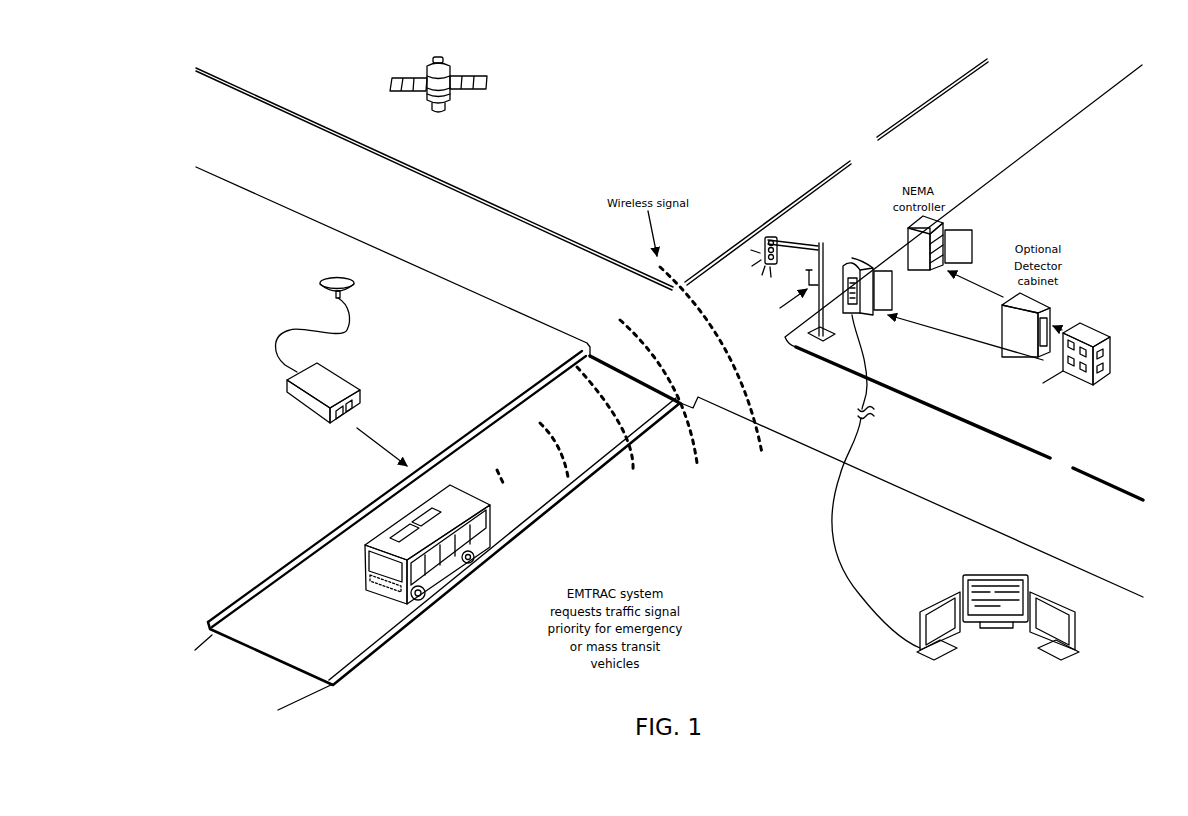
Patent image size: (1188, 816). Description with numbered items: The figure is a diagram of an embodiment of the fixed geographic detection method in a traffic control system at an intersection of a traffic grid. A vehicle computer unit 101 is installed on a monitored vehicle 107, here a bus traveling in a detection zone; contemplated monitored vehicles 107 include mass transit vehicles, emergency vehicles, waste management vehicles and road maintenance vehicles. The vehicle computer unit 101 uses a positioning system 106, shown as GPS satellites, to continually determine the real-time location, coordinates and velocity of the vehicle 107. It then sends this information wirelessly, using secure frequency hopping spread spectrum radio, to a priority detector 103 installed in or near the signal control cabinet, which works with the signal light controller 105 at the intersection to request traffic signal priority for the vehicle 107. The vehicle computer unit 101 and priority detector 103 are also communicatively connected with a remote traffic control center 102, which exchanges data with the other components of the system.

The vehicle computer unit 101 is at (366, 388).
The remote traffic control center 102 is at (927, 667).
The priority detector 103 is at (1057, 416).
The signal light controller 105 is at (856, 215).
The positioning system 106 is at (472, 63).
The monitored vehicle 107 is at (440, 585).